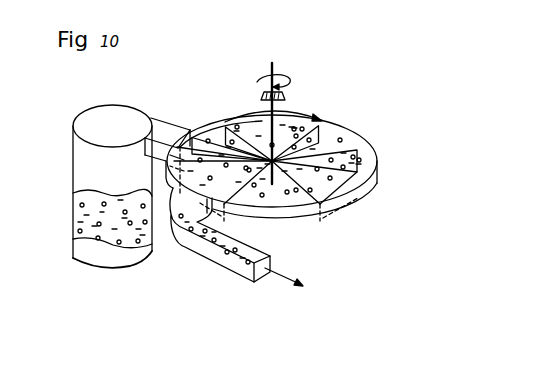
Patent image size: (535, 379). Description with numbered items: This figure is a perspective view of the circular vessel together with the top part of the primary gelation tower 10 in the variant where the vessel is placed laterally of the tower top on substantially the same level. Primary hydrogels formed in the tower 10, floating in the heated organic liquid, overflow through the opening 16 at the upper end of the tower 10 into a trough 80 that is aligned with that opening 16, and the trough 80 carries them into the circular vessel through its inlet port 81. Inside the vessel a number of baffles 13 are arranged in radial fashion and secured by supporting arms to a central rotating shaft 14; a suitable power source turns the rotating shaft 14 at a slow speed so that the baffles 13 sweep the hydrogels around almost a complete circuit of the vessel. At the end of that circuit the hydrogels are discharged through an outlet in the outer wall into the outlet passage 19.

The tower 10 is at (125, 103).
The baffles 13 is at (343, 148).
The rotating shaft 14 is at (276, 107).
The opening 16 is at (189, 137).
The outlet passage 19 is at (238, 256).
The trough 80 is at (170, 150).
The inlet port 81 is at (181, 146).